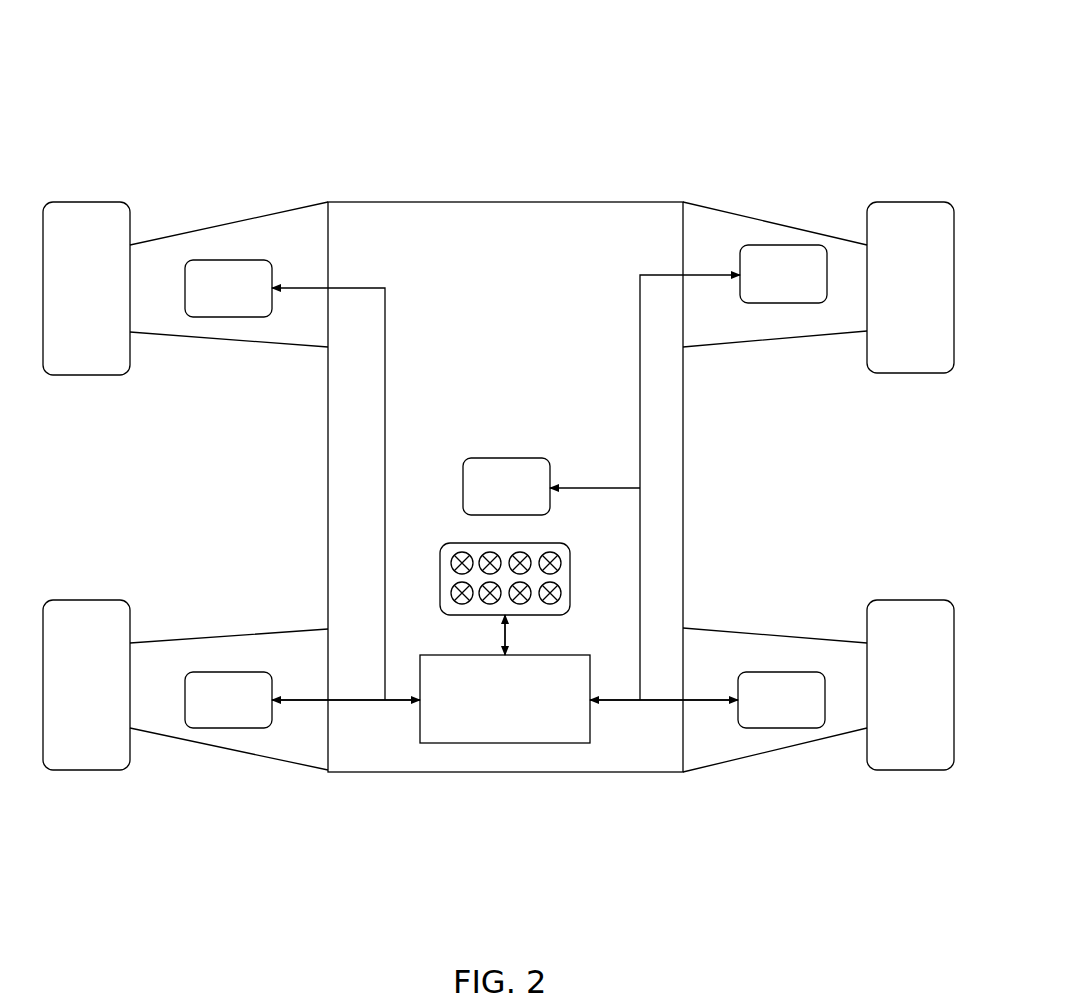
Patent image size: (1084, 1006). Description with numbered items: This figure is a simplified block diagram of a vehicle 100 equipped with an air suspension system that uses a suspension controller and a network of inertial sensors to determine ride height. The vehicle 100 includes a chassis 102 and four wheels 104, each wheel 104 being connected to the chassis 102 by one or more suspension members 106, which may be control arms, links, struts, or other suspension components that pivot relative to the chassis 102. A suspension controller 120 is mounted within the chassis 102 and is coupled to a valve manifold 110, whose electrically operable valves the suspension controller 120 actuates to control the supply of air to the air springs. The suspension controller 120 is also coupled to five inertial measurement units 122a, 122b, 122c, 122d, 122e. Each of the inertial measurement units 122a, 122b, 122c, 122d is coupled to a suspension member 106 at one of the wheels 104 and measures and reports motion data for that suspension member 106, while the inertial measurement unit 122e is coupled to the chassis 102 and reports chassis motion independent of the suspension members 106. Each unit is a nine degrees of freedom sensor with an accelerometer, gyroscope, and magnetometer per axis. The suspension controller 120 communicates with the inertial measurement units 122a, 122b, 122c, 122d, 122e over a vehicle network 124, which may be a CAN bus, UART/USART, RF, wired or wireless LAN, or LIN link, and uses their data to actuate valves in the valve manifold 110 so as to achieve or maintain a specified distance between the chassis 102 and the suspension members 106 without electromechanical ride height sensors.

The vehicle 100 is at (918, 87).
The chassis 102 is at (372, 217).
The wheel 104 is at (80, 227).
The suspension member 106 is at (170, 257).
The valve manifold 110 is at (572, 568).
The suspension controller 120 is at (562, 655).
The inertial measurement unit 122a is at (243, 273).
The inertial measurement unit 122b is at (791, 256).
The inertial measurement unit 122c is at (243, 680).
The inertial measurement unit 122d is at (770, 680).
The inertial measurement unit 122e is at (522, 474).
The vehicle network 124 is at (642, 727).